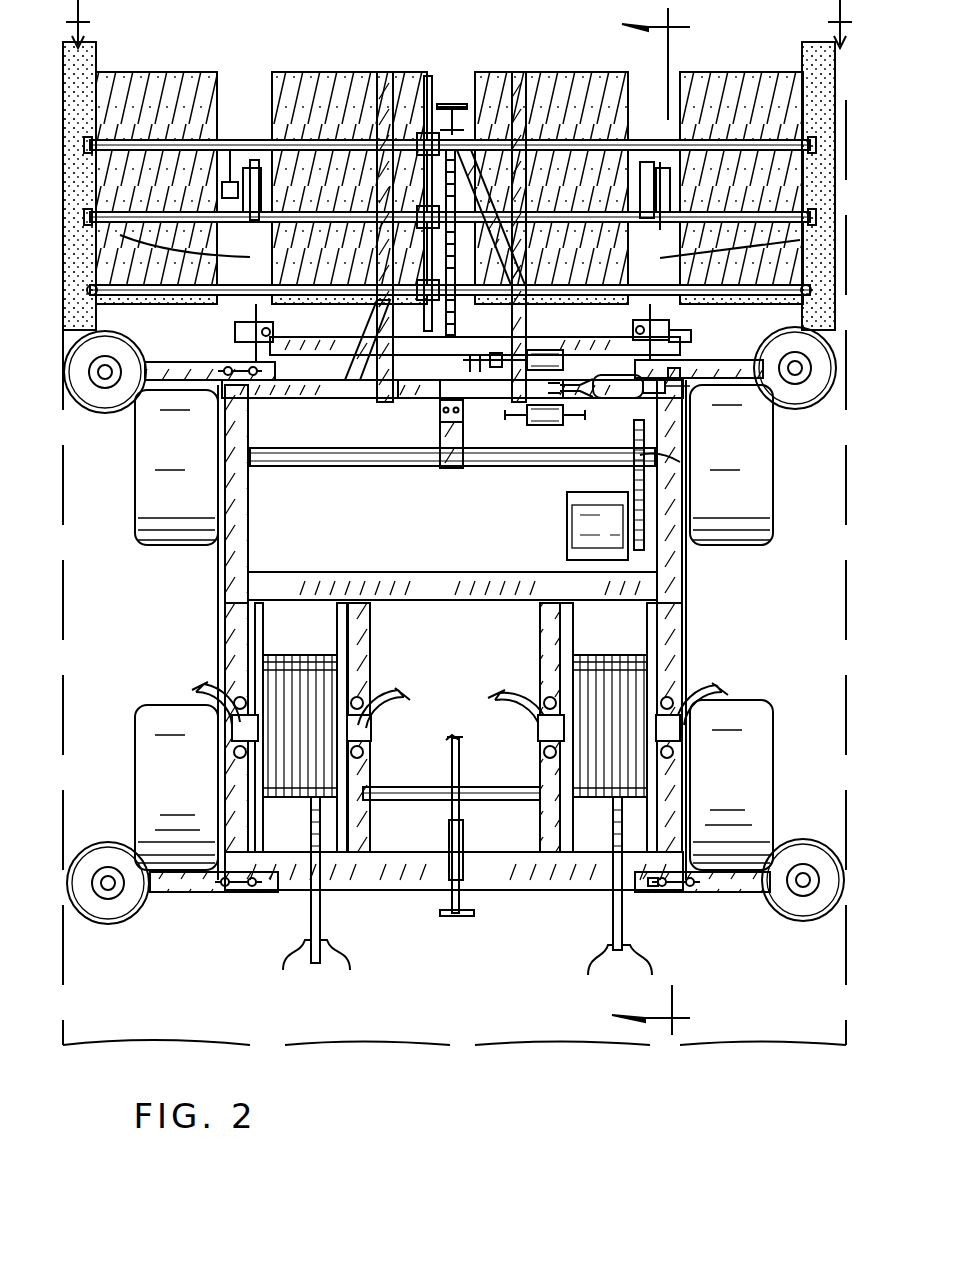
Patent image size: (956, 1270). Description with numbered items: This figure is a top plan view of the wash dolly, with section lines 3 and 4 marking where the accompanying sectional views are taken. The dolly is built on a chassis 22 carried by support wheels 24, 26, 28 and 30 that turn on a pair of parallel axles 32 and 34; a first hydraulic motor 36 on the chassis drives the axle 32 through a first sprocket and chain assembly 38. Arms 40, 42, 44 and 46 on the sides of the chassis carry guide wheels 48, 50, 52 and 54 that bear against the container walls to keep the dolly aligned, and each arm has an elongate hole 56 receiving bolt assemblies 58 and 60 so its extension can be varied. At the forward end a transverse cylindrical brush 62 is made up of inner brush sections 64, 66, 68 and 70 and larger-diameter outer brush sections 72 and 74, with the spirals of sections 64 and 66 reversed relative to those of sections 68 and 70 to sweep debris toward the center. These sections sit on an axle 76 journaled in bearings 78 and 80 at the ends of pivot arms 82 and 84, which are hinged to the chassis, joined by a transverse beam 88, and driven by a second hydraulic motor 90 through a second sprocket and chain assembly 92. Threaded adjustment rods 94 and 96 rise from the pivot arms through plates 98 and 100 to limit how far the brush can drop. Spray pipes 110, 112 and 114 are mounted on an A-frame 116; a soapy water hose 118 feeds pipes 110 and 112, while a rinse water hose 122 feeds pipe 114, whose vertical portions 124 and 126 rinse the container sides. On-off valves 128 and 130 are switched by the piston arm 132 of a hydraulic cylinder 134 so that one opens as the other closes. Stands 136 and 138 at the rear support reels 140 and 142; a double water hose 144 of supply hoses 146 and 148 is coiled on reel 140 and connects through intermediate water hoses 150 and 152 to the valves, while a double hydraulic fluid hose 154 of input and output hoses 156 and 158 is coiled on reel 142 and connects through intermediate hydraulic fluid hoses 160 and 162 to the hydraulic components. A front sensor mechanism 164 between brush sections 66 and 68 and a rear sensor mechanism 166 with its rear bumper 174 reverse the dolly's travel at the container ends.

The section line 3- 3 is at (452, 24).
The section line 4- 4 is at (652, 519).
The chassis 22 is at (228, 578).
The support wheel 24 is at (775, 735).
The support wheel 26 is at (160, 730).
The support wheel 28 is at (135, 448).
The support wheel 30 is at (773, 460).
The axle 32 is at (330, 466).
The axle 34 is at (405, 787).
The first hydraulic motor 36 is at (585, 530).
The first sprocket and chain assembly 38 is at (634, 485).
The arm 40 is at (728, 892).
The arm 42 is at (205, 892).
The arm 44 is at (185, 362).
The arm 46 is at (740, 378).
The guide wheel 48 is at (803, 910).
The guide wheel 50 is at (108, 912).
The guide wheel 52 is at (66, 365).
The guide wheel 54 is at (832, 355).
The elongate hole 56 is at (660, 888).
The bolt assembly 58 is at (690, 888).
The bolt assembly 60 is at (656, 890).
The brush 62 is at (383, 68).
The inner brush section 64 is at (725, 80).
The inner brush section 66 is at (555, 72).
The inner brush section 68 is at (315, 72).
The inner brush section 70 is at (170, 72).
The outer brush section 72 is at (812, 44).
The outer brush section 74 is at (90, 44).
The axle 76 is at (230, 182).
The bearing 78 is at (660, 162).
The bearing 80 is at (250, 160).
The pivot arm 82 is at (800, 240).
The pivot arm 84 is at (120, 235).
The beam 88 is at (290, 398).
The second hydraulic motor 90 is at (440, 412).
The second sprocket and chain assembly 92 is at (444, 318).
The threaded adjustment rod 94 is at (669, 330).
The threaded adjustment rod 96 is at (273, 330).
The plate 98 is at (690, 336).
The plate 100 is at (240, 375).
The spray pipe 110 is at (760, 138).
The spray pipe 112 is at (765, 210).
The spray pipe 114 is at (765, 283).
The A-frame 116 is at (424, 170).
The soapy water hose 118 is at (410, 398).
The rinse water hose 122 is at (470, 372).
The vertically extending portion 124 is at (811, 290).
The vertically extending portion 126 is at (88, 290).
The on-off valve 128 is at (545, 350).
The on-off valve 130 is at (527, 418).
The piston arm 132 is at (590, 395).
The hydraulic cylinder 134 is at (640, 398).
The stand 136 is at (672, 648).
The stand 138 is at (236, 645).
The reel 140 is at (608, 655).
The reel 142 is at (300, 655).
The double water hose 144 is at (612, 935).
The supply hose 146 is at (641, 968).
The supply hose 148 is at (585, 968).
The intermediate water hose 150 is at (680, 372).
The intermediate water hose 152 is at (680, 462).
The double hydraulic fluid hose 154 is at (310, 935).
The input hose 156 is at (350, 970).
The output hose 158 is at (283, 970).
The intermediate hydraulic fluid hose 160 is at (400, 695).
The intermediate hydraulic fluid hose 162 is at (200, 688).
The front sensor mechanism 164 is at (452, 103).
The rear sensor mechanism 166 is at (447, 860).
The rear bumper 174 is at (457, 916).